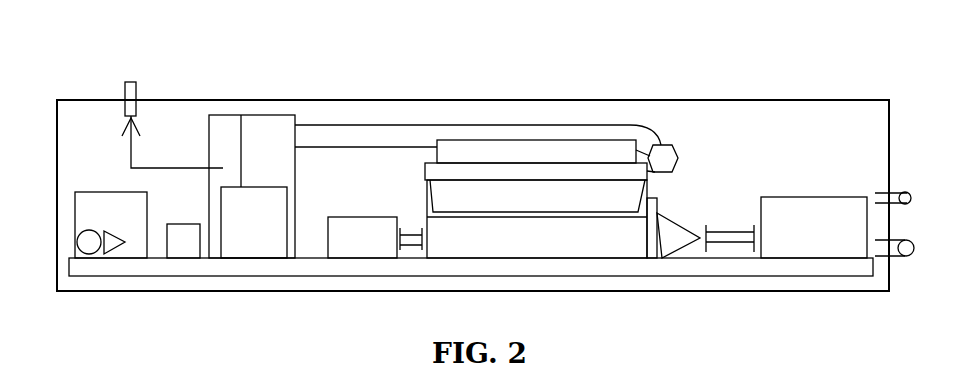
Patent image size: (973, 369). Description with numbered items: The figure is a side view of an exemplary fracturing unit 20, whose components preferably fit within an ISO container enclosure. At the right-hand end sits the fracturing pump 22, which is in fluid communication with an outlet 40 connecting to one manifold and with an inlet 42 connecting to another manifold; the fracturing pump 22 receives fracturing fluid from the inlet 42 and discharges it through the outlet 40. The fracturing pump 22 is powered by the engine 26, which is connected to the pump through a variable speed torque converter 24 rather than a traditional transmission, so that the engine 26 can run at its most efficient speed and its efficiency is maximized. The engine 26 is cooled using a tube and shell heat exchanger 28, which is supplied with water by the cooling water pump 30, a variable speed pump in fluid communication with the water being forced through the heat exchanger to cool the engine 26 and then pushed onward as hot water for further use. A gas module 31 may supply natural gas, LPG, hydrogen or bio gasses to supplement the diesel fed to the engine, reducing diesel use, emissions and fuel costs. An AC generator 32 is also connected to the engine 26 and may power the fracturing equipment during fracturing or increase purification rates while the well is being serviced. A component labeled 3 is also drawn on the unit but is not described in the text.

The antenna 3 is at (131, 80).
The fracturing unit 20 is at (883, 84).
The fracturing pump 22 is at (825, 248).
The variable speed torque converter 24 is at (677, 250).
The engine 26 is at (600, 248).
The tube and shell heat exchanger 28 is at (262, 247).
The cooling water pump 30 is at (91, 247).
The gas module 31 is at (185, 247).
The AC generator 32 is at (370, 248).
The outlet 40 is at (905, 193).
The inlet 42 is at (903, 254).